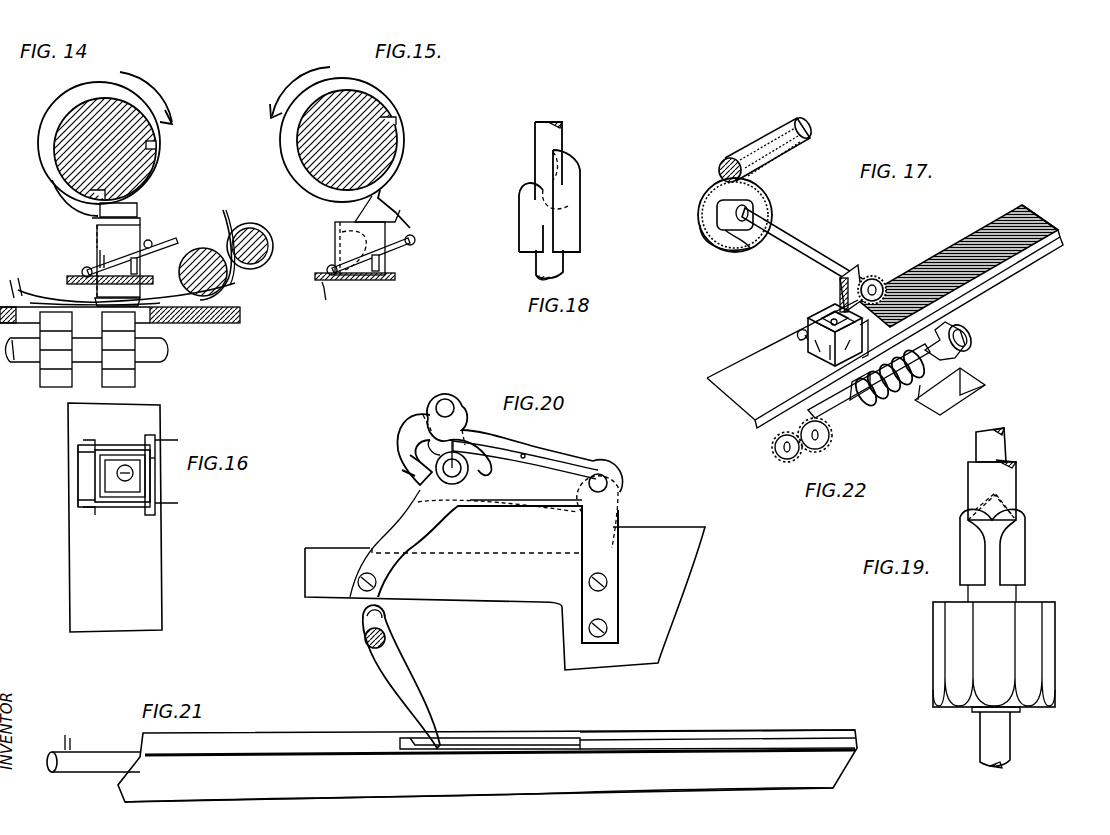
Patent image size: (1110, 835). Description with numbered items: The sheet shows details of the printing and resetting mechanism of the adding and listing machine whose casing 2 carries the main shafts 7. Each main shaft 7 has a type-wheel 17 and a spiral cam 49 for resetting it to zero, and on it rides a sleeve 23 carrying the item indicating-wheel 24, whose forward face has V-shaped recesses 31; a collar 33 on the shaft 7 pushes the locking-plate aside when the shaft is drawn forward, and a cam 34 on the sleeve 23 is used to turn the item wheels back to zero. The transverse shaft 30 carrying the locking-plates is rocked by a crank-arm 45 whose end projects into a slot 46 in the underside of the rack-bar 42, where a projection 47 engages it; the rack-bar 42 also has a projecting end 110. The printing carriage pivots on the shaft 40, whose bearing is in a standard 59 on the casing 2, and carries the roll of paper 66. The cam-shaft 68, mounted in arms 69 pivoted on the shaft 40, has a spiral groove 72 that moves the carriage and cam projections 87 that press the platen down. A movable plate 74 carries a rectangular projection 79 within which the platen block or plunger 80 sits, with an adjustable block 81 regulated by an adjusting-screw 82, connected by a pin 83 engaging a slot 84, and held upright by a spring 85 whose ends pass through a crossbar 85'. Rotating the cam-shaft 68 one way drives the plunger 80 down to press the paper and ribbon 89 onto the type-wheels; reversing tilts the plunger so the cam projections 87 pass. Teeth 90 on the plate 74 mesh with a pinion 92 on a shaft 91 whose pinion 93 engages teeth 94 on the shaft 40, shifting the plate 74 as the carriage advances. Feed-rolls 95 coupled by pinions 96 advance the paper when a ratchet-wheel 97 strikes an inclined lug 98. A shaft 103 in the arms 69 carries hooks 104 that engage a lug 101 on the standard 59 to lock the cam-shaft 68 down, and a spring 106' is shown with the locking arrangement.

In FIG. 14, the casing 2 is at (235, 323).
In FIG. 20, the casing 2 is at (678, 595).
In FIG. 18, the main shaft 7 is at (550, 138).
In FIG. 19, the main shaft 7 is at (1000, 743).
In FIG. 14, the type-wheel 17 is at (45, 387).
In FIG. 19, the sleeve 23 is at (1000, 493).
In FIG. 19, the indicating-wheel 24 is at (1050, 655).
In FIG. 20, the transverse shaft 30 is at (365, 638).
In FIG. 19, the recesses 31 is at (948, 708).
In FIG. 19, the collar 33 is at (1005, 705).
In FIG. 19, the cam 34 is at (1018, 557).
In FIG. 17, the transverse shaft 40 is at (768, 138).
In FIG. 20, the transverse shaft 40 is at (602, 482).
In FIG. 21, the rack-bar 42 is at (340, 732).
In FIG. 20, the crank-arm 45 is at (410, 665).
In FIG. 21, the slot 46 is at (652, 740).
In FIG. 21, the projection 47 is at (545, 736).
In FIG. 18, the spiral cam 49 is at (571, 216).
In FIG. 20, the standard 59 is at (583, 495).
In FIG. 14, the roll of paper 66 is at (223, 210).
In FIG. 14, the cam-shaft 68 is at (153, 162).
In FIG. 15, the cam-shaft 68 is at (398, 150).
In FIG. 20, the cam-shaft 68 is at (452, 468).
In FIG. 20, the arms 69 is at (462, 435).
In FIG. 14, the spiral groove 72 is at (74, 93).
In FIG. 15, the spiral groove 72 is at (375, 98).
In FIG. 14, the movable plate 74 is at (78, 283).
In FIG. 15, the movable plate 74 is at (336, 297).
In FIG. 17, the movable plate 74 is at (940, 245).
In FIG. 16, the movable plate 74 is at (150, 572).
In FIG. 14, the rectangular projection 79 is at (136, 232).
In FIG. 15, the rectangular projection 79 is at (382, 232).
In FIG. 22, the rectangular projection 79 is at (812, 320).
In FIG. 16, the rectangular projection 79 is at (118, 500).
In FIG. 14, the platen block or plunger 80 is at (96, 219).
In FIG. 15, the platen block or plunger 80 is at (415, 233).
In FIG. 22, the platen block or plunger 80 is at (825, 322).
In FIG. 16, the platen block or plunger 80 is at (135, 465).
In FIG. 14, the adjustable block 81 is at (105, 294).
In FIG. 22, the adjusting-screw 82 is at (832, 318).
In FIG. 16, the adjusting-screw 82 is at (118, 473).
In FIG. 14, the pin 83 is at (111, 263).
In FIG. 15, the pin 83 is at (385, 265).
In FIG. 14, the slot 84 is at (137, 267).
In FIG. 15, the slot 84 is at (396, 278).
In FIG. 22, the slot 84 is at (812, 365).
In FIG. 14, the spring 85 is at (141, 253).
In FIG. 15, the spring 85 is at (356, 241).
In FIG. 22, the spring 85 is at (785, 346).
In FIG. 16, the spring 85 is at (165, 478).
In FIG. 22, the crossbar 85' is at (853, 355).
In FIG. 16, the crossbar 85' is at (186, 445).
In FIG. 14, the cam projections 87 is at (118, 218).
In FIG. 15, the cam projections 87 is at (378, 195).
In FIG. 14, the printing-ribbon 89 is at (140, 365).
In FIG. 17, the teeth 90 is at (1004, 212).
In FIG. 17, the shaft 91 is at (800, 240).
In FIG. 17, the pinion 92 is at (874, 276).
In FIG. 17, the pinion 93 is at (760, 197).
In FIG. 17, the teeth 94 is at (805, 145).
In FIG. 14, the feed-rolls 95 is at (250, 223).
In FIG. 22, the feed-rolls 95 is at (890, 395).
In FIG. 22, the pinions 96 is at (832, 448).
In FIG. 22, the ratchet-wheel 97 is at (945, 330).
In FIG. 22, the inclined lug 98 is at (945, 380).
In FIG. 20, the lug 101 is at (405, 462).
In FIG. 20, the shaft 103 is at (448, 405).
In FIG. 20, the hooks 104 is at (415, 424).
In FIG. 20, the spring arm 106' is at (528, 454).
In FIG. 21, the projecting end 110 is at (66, 748).